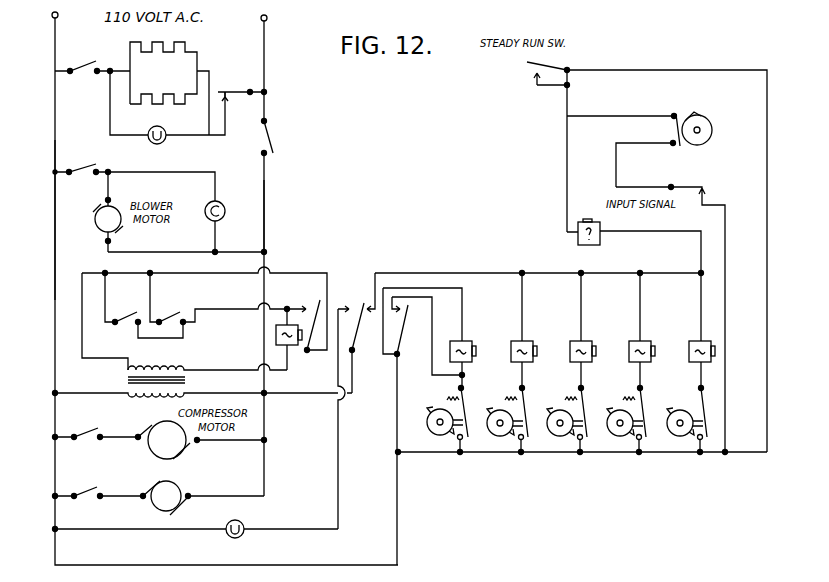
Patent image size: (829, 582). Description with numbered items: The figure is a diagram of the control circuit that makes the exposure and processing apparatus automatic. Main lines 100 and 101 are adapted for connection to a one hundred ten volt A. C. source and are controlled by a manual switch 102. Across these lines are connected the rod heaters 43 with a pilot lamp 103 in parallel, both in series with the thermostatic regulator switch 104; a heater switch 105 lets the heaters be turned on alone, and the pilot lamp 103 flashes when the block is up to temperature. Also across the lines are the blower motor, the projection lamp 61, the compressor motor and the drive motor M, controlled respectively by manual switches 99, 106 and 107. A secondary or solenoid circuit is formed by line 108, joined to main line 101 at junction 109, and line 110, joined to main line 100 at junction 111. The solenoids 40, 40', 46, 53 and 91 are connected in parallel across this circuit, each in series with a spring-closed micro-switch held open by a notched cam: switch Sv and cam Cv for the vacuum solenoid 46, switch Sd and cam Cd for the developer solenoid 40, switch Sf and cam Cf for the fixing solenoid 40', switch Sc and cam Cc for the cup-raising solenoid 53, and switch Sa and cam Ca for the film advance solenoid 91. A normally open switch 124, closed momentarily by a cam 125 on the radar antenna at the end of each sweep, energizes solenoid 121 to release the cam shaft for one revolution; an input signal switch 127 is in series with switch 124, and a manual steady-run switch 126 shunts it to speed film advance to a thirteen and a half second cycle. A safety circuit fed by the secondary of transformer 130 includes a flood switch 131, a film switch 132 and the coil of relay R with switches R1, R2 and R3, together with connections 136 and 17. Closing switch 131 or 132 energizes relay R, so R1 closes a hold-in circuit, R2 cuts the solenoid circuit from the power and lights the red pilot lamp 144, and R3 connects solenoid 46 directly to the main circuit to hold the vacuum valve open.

The rod heaters 43 is at (198, 42).
The pilot lamp 103 is at (166, 139).
The switch of thermostatic regulator 104 is at (236, 92).
The heater switch 105 is at (82, 80).
The manual switch 102 is at (276, 143).
The blower motor switch 99 is at (80, 180).
The projection lamp 61 is at (218, 201).
The main line 101 is at (264, 228).
The main line 100 is at (55, 267).
The flood switch 131 is at (136, 312).
The film switch 132 is at (179, 312).
The conductor 136 is at (105, 312).
The conductor 17 is at (165, 338).
The transformer 130 is at (188, 383).
The junction 109 is at (266, 396).
The compressor motor switch 106 is at (88, 430).
The drive motor switch 107 is at (85, 490).
The drive motor M is at (158, 506).
The junction 111 is at (55, 532).
The red pilot lamp 144 is at (243, 535).
The relay R is at (284, 339).
The relay switch R1 is at (317, 300).
The relay switch R2 is at (363, 306).
The relay switch R3 is at (402, 318).
The line 108 is at (470, 273).
The solenoid 46 is at (470, 342).
The solenoid 40 is at (531, 330).
The solenoid 40' is at (593, 330).
The solenoid 53 is at (648, 342).
The solenoid 91 is at (712, 338).
The line 110 is at (568, 455).
The steady-run switch 126 is at (528, 63).
The switch 124 is at (676, 130).
The cam 125 is at (707, 113).
The input signal switch 127 is at (688, 186).
The solenoid 121 is at (578, 239).
The cam Cv is at (432, 410).
The micro-switch Sv is at (466, 398).
The cam Cd is at (492, 413).
The micro-switch Sd is at (526, 398).
The cam Cf is at (553, 413).
The micro-switch Sf is at (586, 398).
The cam Cc is at (613, 413).
The micro-switch Sc is at (645, 400).
The cam Ca is at (673, 414).
The micro-switch Sa is at (705, 408).